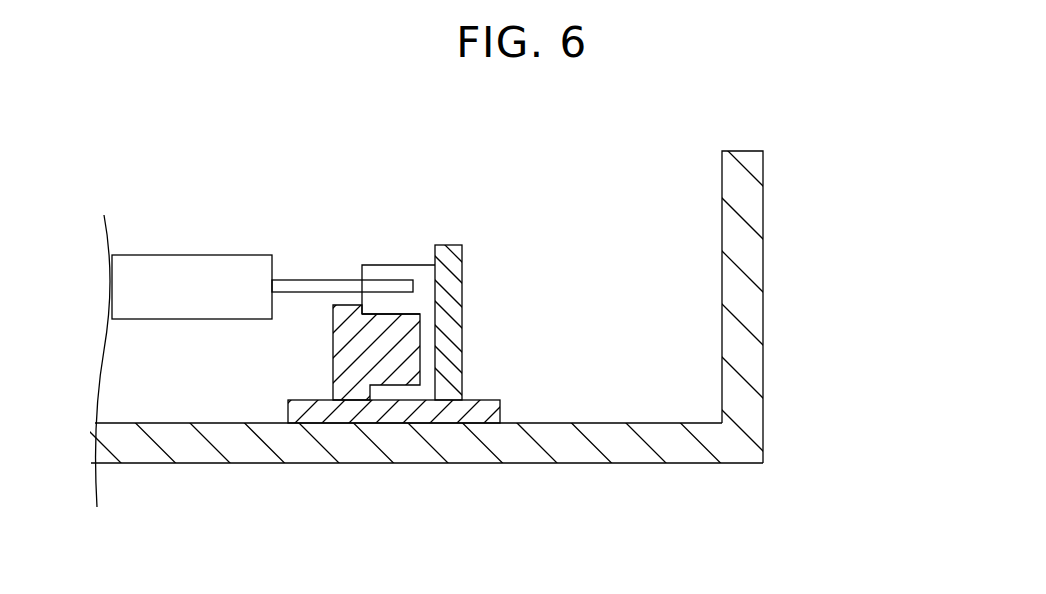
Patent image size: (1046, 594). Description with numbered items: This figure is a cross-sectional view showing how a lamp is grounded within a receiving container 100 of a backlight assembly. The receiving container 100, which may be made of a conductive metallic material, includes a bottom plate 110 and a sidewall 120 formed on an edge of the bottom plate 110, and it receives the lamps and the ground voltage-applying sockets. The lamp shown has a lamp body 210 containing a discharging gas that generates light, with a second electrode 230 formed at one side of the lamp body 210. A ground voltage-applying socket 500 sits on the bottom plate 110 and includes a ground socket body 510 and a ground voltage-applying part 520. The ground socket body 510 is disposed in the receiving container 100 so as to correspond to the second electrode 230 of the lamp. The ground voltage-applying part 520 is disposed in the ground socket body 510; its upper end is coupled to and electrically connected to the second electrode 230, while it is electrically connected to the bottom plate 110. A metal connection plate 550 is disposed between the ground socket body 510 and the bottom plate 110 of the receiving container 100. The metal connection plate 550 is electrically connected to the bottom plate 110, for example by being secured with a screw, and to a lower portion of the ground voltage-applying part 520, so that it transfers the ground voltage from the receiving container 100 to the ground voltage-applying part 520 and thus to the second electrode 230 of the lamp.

The receiving container 100 is at (495, 297).
The bottom plate 110 is at (677, 452).
The sidewall 120 is at (788, 307).
The lamp body 210 is at (177, 268).
The second electrode 230 is at (307, 287).
The ground voltage-applying socket 500 is at (400, 298).
The ground socket body 510 is at (447, 289).
The ground voltage-applying part 520 is at (388, 271).
The metal connection plate 550 is at (440, 415).